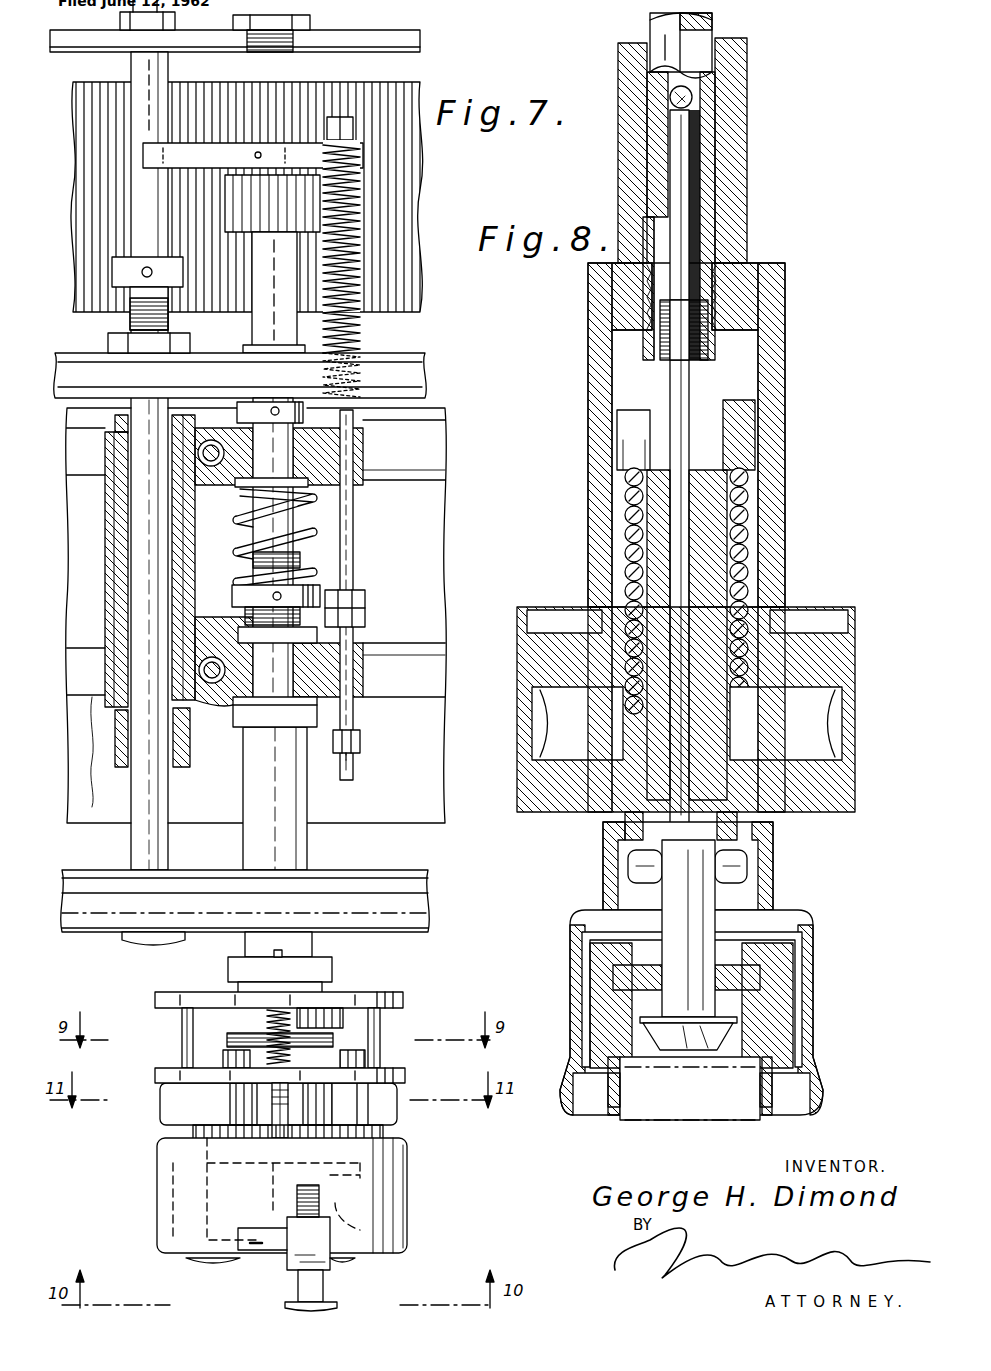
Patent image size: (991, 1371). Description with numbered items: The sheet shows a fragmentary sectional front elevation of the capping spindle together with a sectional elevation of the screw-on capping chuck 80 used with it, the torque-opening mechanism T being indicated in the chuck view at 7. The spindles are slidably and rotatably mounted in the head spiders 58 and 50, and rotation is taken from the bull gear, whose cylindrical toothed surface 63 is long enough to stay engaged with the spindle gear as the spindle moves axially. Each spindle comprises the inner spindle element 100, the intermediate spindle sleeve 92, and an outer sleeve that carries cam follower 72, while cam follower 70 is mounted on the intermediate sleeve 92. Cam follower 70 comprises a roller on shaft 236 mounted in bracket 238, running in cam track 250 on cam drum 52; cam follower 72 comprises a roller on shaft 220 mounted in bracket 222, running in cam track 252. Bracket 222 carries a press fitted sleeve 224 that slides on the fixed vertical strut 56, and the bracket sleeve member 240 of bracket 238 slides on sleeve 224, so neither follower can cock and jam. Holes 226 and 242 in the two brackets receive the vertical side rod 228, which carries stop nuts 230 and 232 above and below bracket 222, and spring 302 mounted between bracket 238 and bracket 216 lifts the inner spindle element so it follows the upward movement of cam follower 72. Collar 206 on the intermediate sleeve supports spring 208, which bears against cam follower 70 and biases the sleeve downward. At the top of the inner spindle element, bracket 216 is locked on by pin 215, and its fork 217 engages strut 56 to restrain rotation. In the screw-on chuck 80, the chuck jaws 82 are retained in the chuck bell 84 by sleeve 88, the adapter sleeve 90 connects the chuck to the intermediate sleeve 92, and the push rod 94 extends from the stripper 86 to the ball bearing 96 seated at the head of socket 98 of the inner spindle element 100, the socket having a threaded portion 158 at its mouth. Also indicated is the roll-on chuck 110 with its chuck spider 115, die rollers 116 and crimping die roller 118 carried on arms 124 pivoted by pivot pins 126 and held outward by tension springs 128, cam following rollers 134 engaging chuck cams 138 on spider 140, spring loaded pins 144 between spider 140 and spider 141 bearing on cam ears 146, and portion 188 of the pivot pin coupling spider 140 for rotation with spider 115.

In FIG. 7, the spider 50 is at (405, 870).
In FIG. 7, the cam drum 52 is at (432, 595).
In FIG. 7, the vertical strut 56 is at (131, 63).
In FIG. 7, the spider 58 is at (250, 195).
In FIG. 7, the cylindrical toothed surface 63 is at (400, 170).
In FIG. 7, the cam follower 70 is at (430, 432).
In FIG. 7, the cam follower 72 is at (388, 660).
In FIG. 8, the flange section 7 is at (862, 710).
In FIG. 8, the screw-on capping chuck 80 is at (772, 826).
In FIG. 8, the chuck jaws 82 is at (770, 1105).
In FIG. 8, the chuck bell 84 is at (814, 1013).
In FIG. 8, the stripper 86 is at (692, 918).
In FIG. 8, the sleeve 88 is at (722, 943).
In FIG. 8, the adapter sleeve 90 is at (788, 492).
In FIG. 8, the intermediate spindle sleeve 92 is at (748, 212).
In FIG. 8, the push rod 94 is at (660, 375).
In FIG. 8, the ball bearing 96 is at (648, 40).
In FIG. 8, the socket 98 is at (678, 150).
In FIG. 8, the inner spindle element 100 is at (714, 22).
In FIG. 7, the roll-on chuck 110 is at (140, 1160).
In FIG. 7, the chuck spider 115 is at (168, 1188).
In FIG. 7, the die rollers 116 is at (198, 1262).
In FIG. 7, the crimping die roller 118 is at (337, 1300).
In FIG. 7, the arm 124 is at (318, 1232).
In FIG. 7, the pivot pin 126 is at (180, 1022).
In FIG. 7, the tension spring 128 is at (258, 1248).
In FIG. 7, the cam following roller 134 is at (400, 1175).
In FIG. 7, the chuck cam 138 is at (300, 1132).
In FIG. 7, the spider 140 is at (390, 1070).
In FIG. 7, the spider 141 is at (390, 993).
In FIG. 7, the spring loaded pins 144 is at (265, 1020).
In FIG. 7, the cam ears 146 is at (275, 1098).
In FIG. 8, the threaded portion 158 is at (650, 320).
In FIG. 7, the portion of pin 188 is at (223, 1060).
In FIG. 7, the collar 206 is at (315, 588).
In FIG. 7, the spring 208 is at (318, 530).
In FIG. 7, the pin 215 is at (254, 154).
In FIG. 7, the bracket 216 is at (300, 150).
In FIG. 7, the fork 217 is at (150, 130).
In FIG. 7, the shaft 220 is at (212, 683).
In FIG. 7, the bracket 222 is at (95, 755).
In FIG. 7, the press fitted sleeve 224 is at (188, 760).
In FIG. 7, the hole 226 is at (356, 700).
In FIG. 7, the vertical side rod 228 is at (350, 492).
In FIG. 7, the stop nut 230 is at (368, 608).
In FIG. 7, the stop nut 232 is at (362, 752).
In FIG. 7, the shaft 236 is at (214, 440).
In FIG. 7, the bracket 238 is at (97, 445).
In FIG. 7, the bracket sleeve member 240 is at (105, 560).
In FIG. 7, the hole 242 is at (433, 478).
In FIG. 7, the cam track 250 is at (113, 283).
In FIG. 7, the cam track 252 is at (420, 653).
In FIG. 7, the spring 302 is at (365, 318).